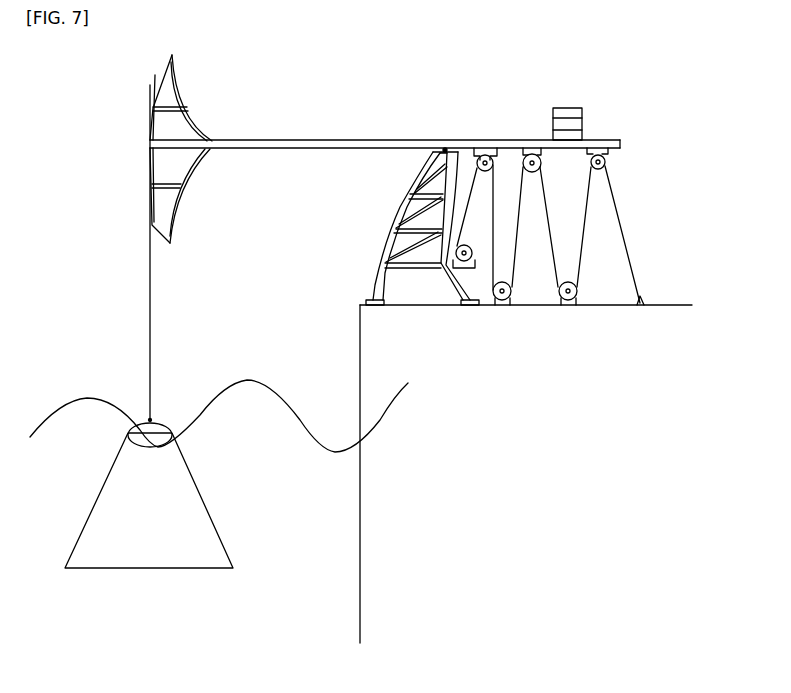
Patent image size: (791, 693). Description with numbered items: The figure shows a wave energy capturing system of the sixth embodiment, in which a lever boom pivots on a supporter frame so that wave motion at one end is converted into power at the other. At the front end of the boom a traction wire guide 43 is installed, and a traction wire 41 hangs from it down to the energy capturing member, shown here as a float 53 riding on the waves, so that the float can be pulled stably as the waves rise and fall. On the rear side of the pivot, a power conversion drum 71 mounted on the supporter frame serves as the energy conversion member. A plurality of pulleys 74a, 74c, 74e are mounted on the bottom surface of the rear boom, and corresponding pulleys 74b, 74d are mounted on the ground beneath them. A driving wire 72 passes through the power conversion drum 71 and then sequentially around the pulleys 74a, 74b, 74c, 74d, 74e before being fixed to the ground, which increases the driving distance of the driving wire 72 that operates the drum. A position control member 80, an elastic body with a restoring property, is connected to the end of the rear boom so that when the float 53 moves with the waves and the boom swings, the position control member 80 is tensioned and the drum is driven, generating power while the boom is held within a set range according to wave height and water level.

The traction wire 41 is at (151, 312).
The traction wire guide 43 is at (181, 87).
The float 53 is at (150, 565).
The power conversion drum 71 is at (458, 250).
The driving wire 72 is at (622, 233).
The pulley 74a is at (487, 153).
The pulley 74b is at (503, 291).
The pulley 74c is at (533, 153).
The pulley 74d is at (569, 291).
The pulley 74e is at (600, 162).
The position control member 80 is at (572, 112).